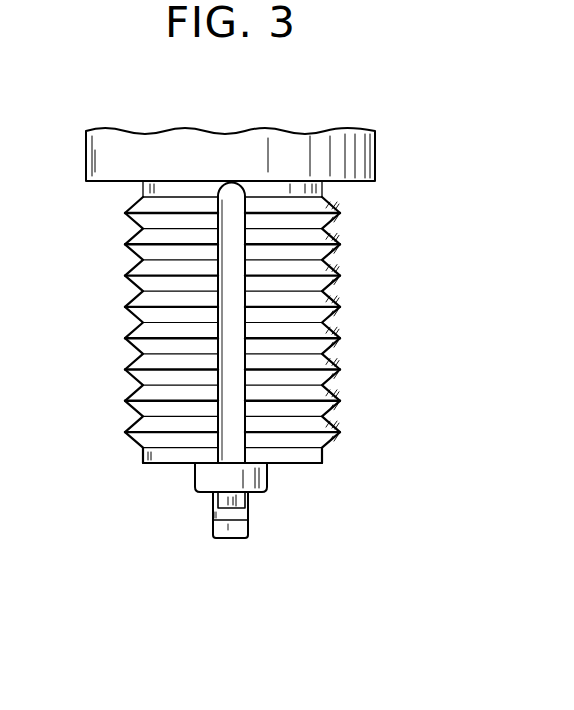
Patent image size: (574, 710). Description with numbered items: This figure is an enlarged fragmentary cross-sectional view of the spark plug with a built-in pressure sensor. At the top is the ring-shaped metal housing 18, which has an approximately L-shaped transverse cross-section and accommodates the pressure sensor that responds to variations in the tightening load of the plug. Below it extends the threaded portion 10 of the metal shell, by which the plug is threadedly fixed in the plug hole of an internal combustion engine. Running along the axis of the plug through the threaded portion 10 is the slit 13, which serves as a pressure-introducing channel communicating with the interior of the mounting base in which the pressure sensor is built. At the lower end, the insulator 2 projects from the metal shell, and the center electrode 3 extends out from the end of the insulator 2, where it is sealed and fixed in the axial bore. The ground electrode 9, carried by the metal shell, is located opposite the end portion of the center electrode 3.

The metal housing 18 is at (375, 163).
The threaded portion 10 is at (340, 310).
The slit 13 is at (228, 313).
The insulator 2 is at (267, 473).
The center electrode 3 is at (248, 505).
The ground electrode 9 is at (212, 525).